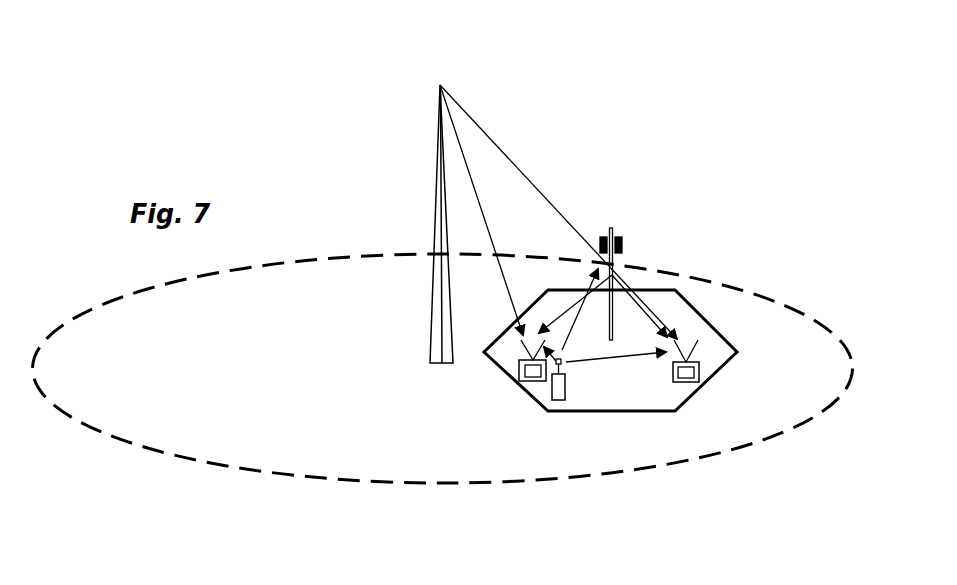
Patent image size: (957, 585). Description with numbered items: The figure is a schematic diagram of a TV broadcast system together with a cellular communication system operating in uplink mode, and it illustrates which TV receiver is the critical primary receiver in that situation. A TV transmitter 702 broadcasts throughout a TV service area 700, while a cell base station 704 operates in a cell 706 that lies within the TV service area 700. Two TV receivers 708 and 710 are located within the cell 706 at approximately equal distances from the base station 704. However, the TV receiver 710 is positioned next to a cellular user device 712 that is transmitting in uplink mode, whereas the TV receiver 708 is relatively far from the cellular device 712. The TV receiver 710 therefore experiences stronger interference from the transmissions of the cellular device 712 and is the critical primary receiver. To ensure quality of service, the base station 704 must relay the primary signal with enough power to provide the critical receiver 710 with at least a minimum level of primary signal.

The TV service area 700 is at (291, 364).
The TV transmitter 702 is at (440, 73).
The cell base station 704 is at (623, 243).
The cell 706 is at (656, 394).
The TV receiver 708 is at (698, 362).
The TV receiver 710 is at (534, 381).
The cellular user device 712 is at (558, 400).